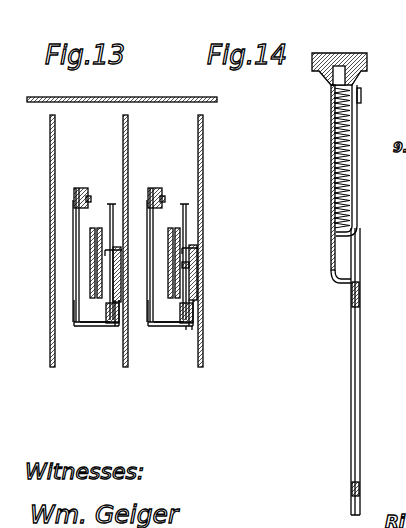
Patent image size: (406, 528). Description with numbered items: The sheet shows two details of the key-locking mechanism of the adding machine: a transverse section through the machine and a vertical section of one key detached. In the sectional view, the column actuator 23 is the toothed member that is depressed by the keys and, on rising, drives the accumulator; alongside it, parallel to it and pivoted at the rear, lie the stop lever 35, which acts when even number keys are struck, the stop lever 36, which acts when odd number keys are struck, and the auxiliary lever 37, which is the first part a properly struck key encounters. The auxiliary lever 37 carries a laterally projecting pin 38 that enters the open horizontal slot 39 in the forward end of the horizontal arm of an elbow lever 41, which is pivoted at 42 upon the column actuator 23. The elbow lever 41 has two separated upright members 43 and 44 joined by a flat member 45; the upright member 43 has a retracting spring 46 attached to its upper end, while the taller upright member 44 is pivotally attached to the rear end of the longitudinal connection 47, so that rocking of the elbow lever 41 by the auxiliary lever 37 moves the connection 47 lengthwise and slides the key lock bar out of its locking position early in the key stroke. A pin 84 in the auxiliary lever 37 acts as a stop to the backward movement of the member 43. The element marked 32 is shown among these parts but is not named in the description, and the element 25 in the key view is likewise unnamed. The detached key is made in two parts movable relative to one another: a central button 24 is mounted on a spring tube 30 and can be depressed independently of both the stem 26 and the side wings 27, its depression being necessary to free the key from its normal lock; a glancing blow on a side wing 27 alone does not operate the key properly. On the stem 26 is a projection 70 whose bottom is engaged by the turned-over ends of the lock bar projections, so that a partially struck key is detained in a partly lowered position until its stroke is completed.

In FIG. 13, the partition posts 32 is at (197, 118).
In FIG. 13, the longitudinal connection 47 is at (80, 187).
In FIG. 13, the stop lever 35 is at (92, 265).
In FIG. 13, the retracting spring 46 is at (109, 214).
In FIG. 13, the upright member 43 is at (86, 201).
In FIG. 13, the upright member 44 is at (74, 209).
In FIG. 13, the auxiliary lever 37 is at (121, 249).
In FIG. 13, the column actuator 23 is at (121, 262).
In FIG. 13, the pin 84 is at (197, 270).
In FIG. 13, the stop lever 36 is at (133, 313).
In FIG. 13, the elbow lever 41 is at (75, 323).
In FIG. 13, the flat member 45 is at (97, 326).
In FIG. 13, the laterally projecting pin 38 is at (110, 324).
In FIG. 13, the open horizontal slot 39 is at (190, 328).
In FIG. 13, the pivot 42 is at (121, 303).
In FIG. 14, the central button 24 is at (347, 52).
In FIG. 14, the side wings 27 is at (358, 52).
In FIG. 14, the spring tube 30 is at (338, 110).
In FIG. 14, the tube 25 is at (331, 150).
In FIG. 14, the stem 26 is at (361, 421).
In FIG. 14, the projection 70 is at (362, 293).